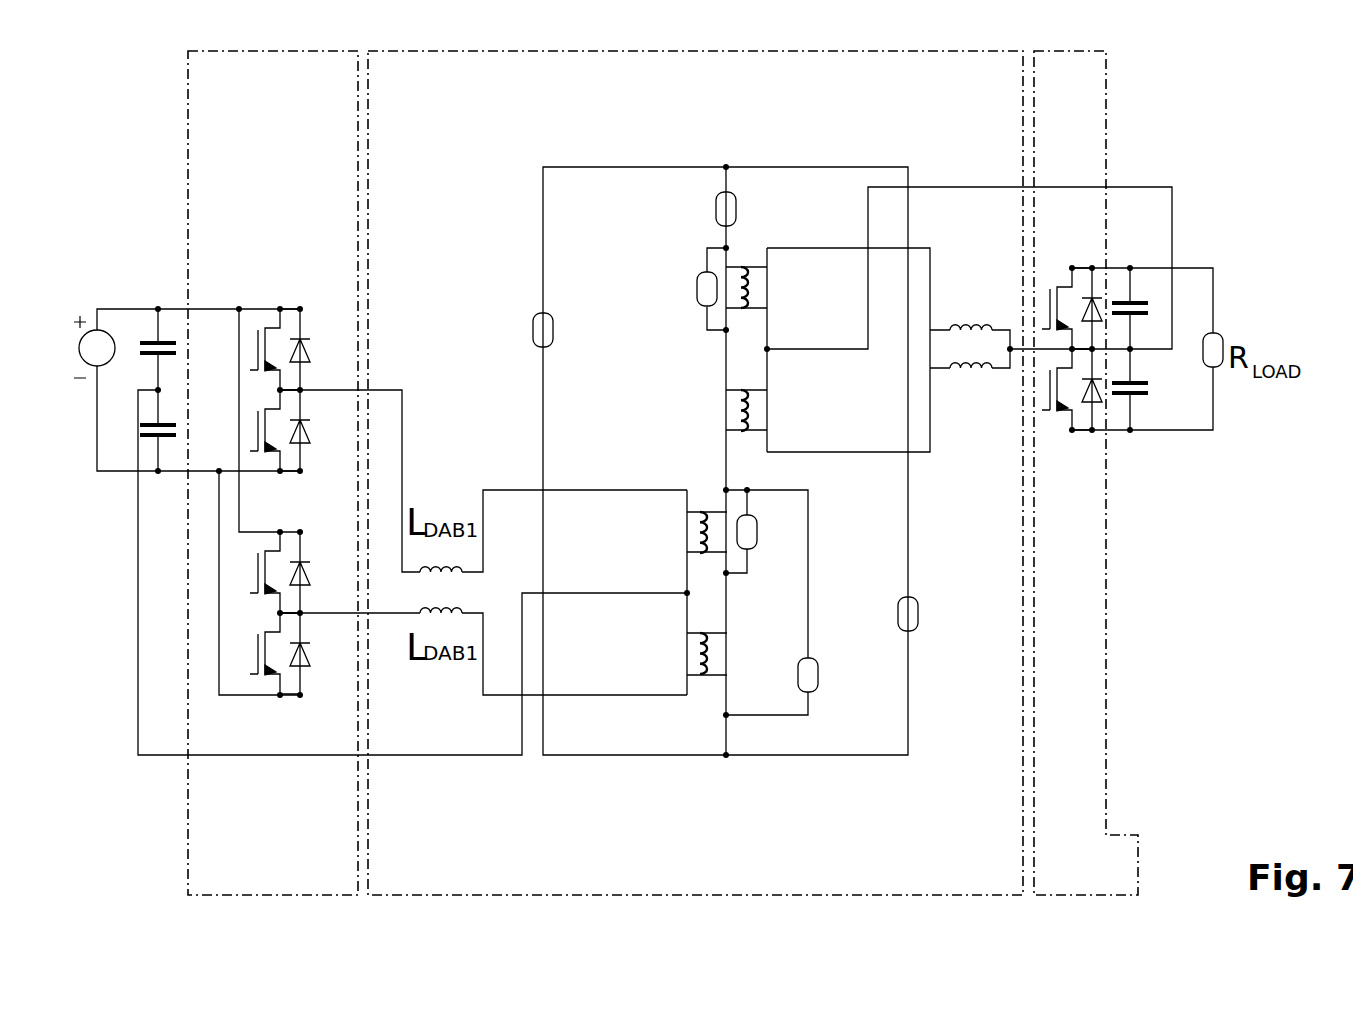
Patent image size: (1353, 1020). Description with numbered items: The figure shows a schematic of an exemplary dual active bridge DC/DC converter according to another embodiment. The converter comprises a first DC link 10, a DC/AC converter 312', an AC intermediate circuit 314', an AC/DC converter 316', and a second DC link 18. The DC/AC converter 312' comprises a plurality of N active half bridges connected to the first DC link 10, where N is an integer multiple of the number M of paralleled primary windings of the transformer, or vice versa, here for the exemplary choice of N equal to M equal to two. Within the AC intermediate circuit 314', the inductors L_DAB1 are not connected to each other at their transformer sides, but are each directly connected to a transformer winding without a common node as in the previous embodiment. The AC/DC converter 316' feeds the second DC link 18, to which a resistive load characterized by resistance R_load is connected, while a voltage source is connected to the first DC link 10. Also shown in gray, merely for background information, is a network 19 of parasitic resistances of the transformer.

The first DC link 10 is at (157, 308).
The second DC link 18 is at (1133, 403).
The network of parasitic resistances of the transformer 19 is at (912, 510).
The DC/AC converter 312' is at (273, 473).
The AC intermediate circuit 314' is at (695, 473).
The AC/DC converter 316' is at (1086, 473).